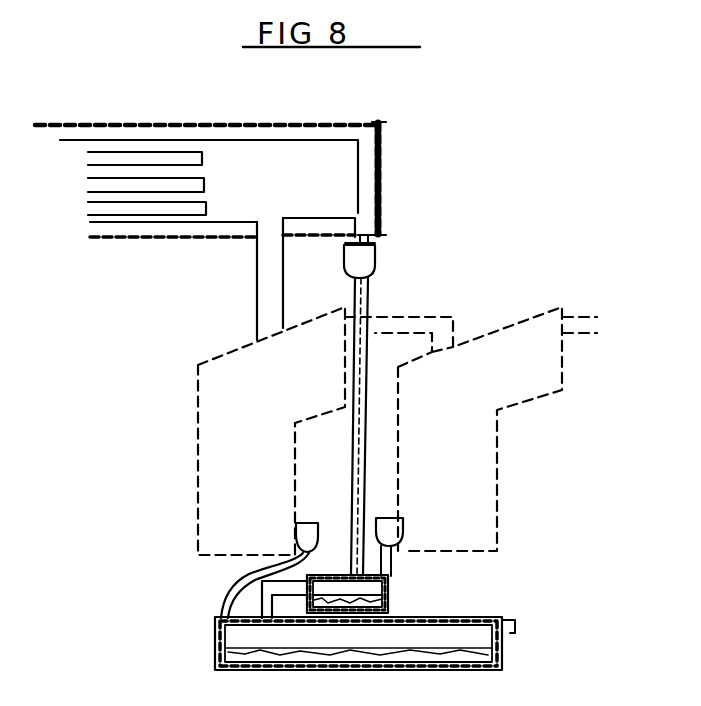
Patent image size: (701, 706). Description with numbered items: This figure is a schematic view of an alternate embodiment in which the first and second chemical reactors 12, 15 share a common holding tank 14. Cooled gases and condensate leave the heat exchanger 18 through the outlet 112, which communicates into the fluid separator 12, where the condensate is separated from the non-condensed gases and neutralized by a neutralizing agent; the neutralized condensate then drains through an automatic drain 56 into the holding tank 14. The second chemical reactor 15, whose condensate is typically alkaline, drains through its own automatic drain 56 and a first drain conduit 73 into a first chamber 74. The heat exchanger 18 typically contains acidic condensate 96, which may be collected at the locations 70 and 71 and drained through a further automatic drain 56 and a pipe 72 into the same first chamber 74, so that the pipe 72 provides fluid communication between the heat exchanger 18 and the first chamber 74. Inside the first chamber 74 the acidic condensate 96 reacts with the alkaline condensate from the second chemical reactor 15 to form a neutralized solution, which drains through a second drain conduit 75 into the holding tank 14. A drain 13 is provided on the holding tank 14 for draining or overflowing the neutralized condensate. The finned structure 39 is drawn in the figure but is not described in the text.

The heat exchanger 18 is at (378, 143).
The heat exchanger fins 39 is at (247, 195).
The outlet 112 is at (256, 302).
The collection point 70 is at (343, 195).
The collection point 71 is at (350, 207).
The automatic drain 56 is at (378, 258).
The pipe 72 is at (368, 362).
The fluid separator 12 is at (197, 415).
The second chemical reactor 15 is at (523, 407).
The first drain conduit 73 is at (407, 553).
The second drain conduit 75 is at (240, 586).
The first chamber 74 is at (397, 593).
The acidic condensate 96 is at (400, 607).
The drain 13 is at (520, 622).
The holding tank 14 is at (433, 668).